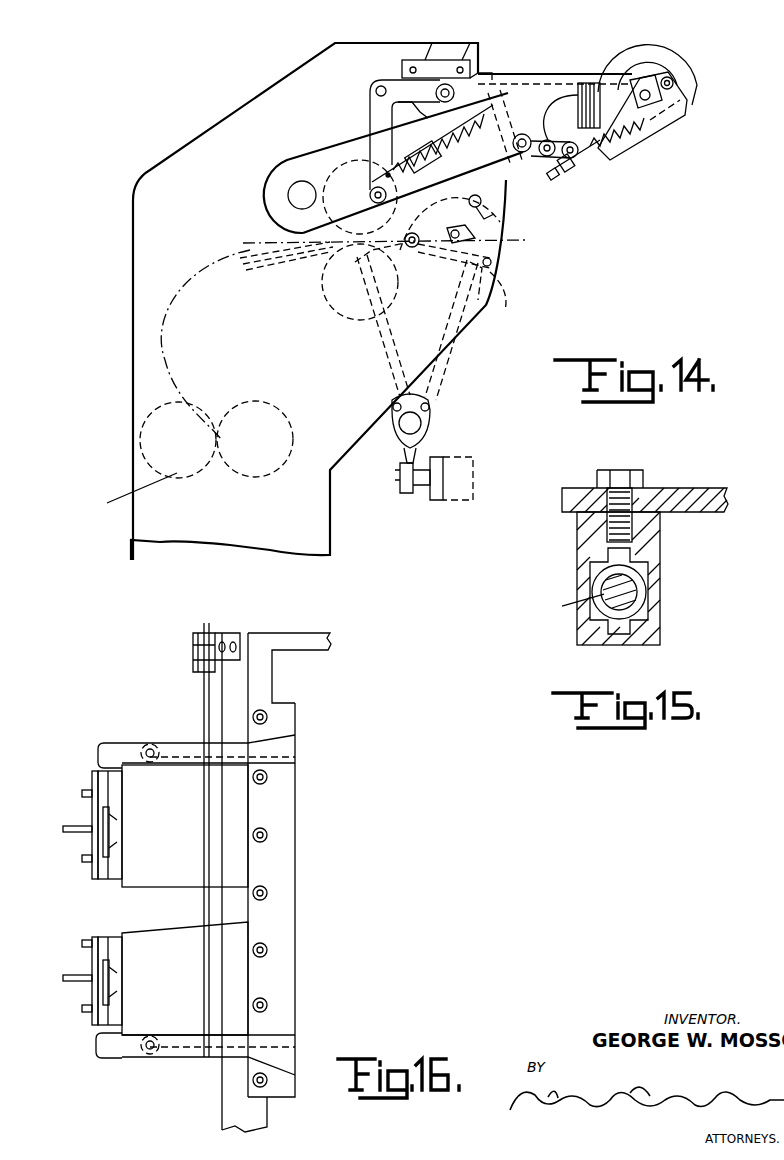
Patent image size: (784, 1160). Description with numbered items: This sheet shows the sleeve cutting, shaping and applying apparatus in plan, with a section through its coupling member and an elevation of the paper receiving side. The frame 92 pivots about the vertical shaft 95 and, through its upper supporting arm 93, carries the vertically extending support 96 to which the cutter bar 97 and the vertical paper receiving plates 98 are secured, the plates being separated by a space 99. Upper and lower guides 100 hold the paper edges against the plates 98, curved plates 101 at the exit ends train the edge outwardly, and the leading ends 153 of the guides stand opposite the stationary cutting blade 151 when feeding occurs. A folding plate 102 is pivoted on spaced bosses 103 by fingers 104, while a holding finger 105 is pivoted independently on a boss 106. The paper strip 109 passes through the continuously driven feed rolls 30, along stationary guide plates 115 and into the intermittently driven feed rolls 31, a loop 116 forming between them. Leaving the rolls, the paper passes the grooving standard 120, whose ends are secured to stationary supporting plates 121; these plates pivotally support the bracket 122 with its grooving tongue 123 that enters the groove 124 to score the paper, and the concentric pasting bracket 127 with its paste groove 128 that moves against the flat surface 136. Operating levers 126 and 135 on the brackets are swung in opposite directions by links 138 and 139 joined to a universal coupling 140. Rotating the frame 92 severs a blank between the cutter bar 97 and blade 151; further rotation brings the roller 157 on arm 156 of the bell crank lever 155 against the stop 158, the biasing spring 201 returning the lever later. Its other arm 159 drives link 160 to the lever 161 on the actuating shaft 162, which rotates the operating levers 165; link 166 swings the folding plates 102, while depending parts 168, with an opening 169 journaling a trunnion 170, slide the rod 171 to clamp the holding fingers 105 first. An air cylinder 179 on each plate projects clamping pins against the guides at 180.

In FIG. 14, the feed rolls 30 is at (280, 417).
In FIG. 14, the feed rolls 31 is at (336, 165).
In FIG. 14, the frame 92 is at (275, 177).
In FIG. 16, the upper supporting arm 93 is at (303, 641).
In FIG. 14, the shaft 95 is at (292, 196).
In FIG. 16, the support 96 is at (265, 686).
In FIG. 14, the cutter bar 97 is at (482, 70).
In FIG. 16, the cutter bar 97 is at (285, 831).
In FIG. 16, the paper receiving plates 98 is at (212, 839).
In FIG. 16, the space 99 is at (136, 910).
In FIG. 14, the guides 100 is at (545, 78).
In FIG. 16, the guides 100 is at (213, 757).
In FIG. 16, the curved plates 101 is at (97, 752).
In FIG. 14, the folding plate 102 is at (615, 80).
In FIG. 16, the folding plate 102 is at (94, 780).
In FIG. 16, the bosses 103 is at (114, 797).
In FIG. 16, the fingers 104 is at (82, 795).
In FIG. 14, the holding finger 105 is at (666, 44).
In FIG. 16, the holding finger 105 is at (64, 832).
In FIG. 16, the boss 106 is at (114, 825).
In FIG. 14, the paper strip 109 is at (132, 500).
In FIG. 14, the stationary guide plates 115 is at (296, 255).
In FIG. 14, the loop 116 is at (195, 272).
In FIG. 14, the grooving standard 120 is at (492, 240).
In FIG. 14, the stationary supporting plates 121 is at (317, 62).
In FIG. 14, the bracket 122 is at (484, 300).
In FIG. 14, the grooving tongue 123 is at (492, 266).
In FIG. 14, the groove 124 is at (492, 254).
In FIG. 14, the operating lever 126 is at (366, 278).
In FIG. 14, the pasting bracket 127 is at (451, 233).
In FIG. 14, the groove 128 is at (493, 226).
In FIG. 14, the operating lever 135 is at (402, 262).
In FIG. 14, the flat surface 136 is at (507, 274).
In FIG. 14, the link 138 is at (435, 382).
In FIG. 14, the link 139 is at (382, 378).
In FIG. 14, the universal coupling 140 is at (422, 430).
In FIG. 14, the stationary cutting blade 151 is at (505, 204).
In FIG. 14, the leading ends 153 is at (494, 78).
In FIG. 16, the leading ends 153 is at (285, 756).
In FIG. 14, the bell crank lever 155 is at (378, 106).
In FIG. 14, the arm 156 is at (421, 70).
In FIG. 14, the roller 157 is at (452, 80).
In FIG. 14, the stop 158 is at (415, 58).
In FIG. 14, the arm 159 is at (438, 137).
In FIG. 14, the link 160 is at (462, 150).
In FIG. 14, the lever 161 is at (540, 160).
In FIG. 16, the actuating shaft 162 is at (211, 626).
In FIG. 15, the operating levers 165 is at (700, 491).
In FIG. 14, the link 166 is at (688, 103).
In FIG. 15, the depending parts 168 is at (655, 538).
In FIG. 15, the opening 169 is at (646, 567).
In FIG. 15, the trunnion 170 is at (638, 600).
In FIG. 14, the rod 171 is at (585, 168).
In FIG. 15, the rod 171 is at (568, 605).
In FIG. 14, the air cylinder 179 is at (576, 100).
In FIG. 16, the air cylinder 179 is at (143, 747).
In FIG. 16, the clamping pin engagement location 180 is at (160, 744).
In FIG. 14, the biasing spring 201 is at (387, 173).